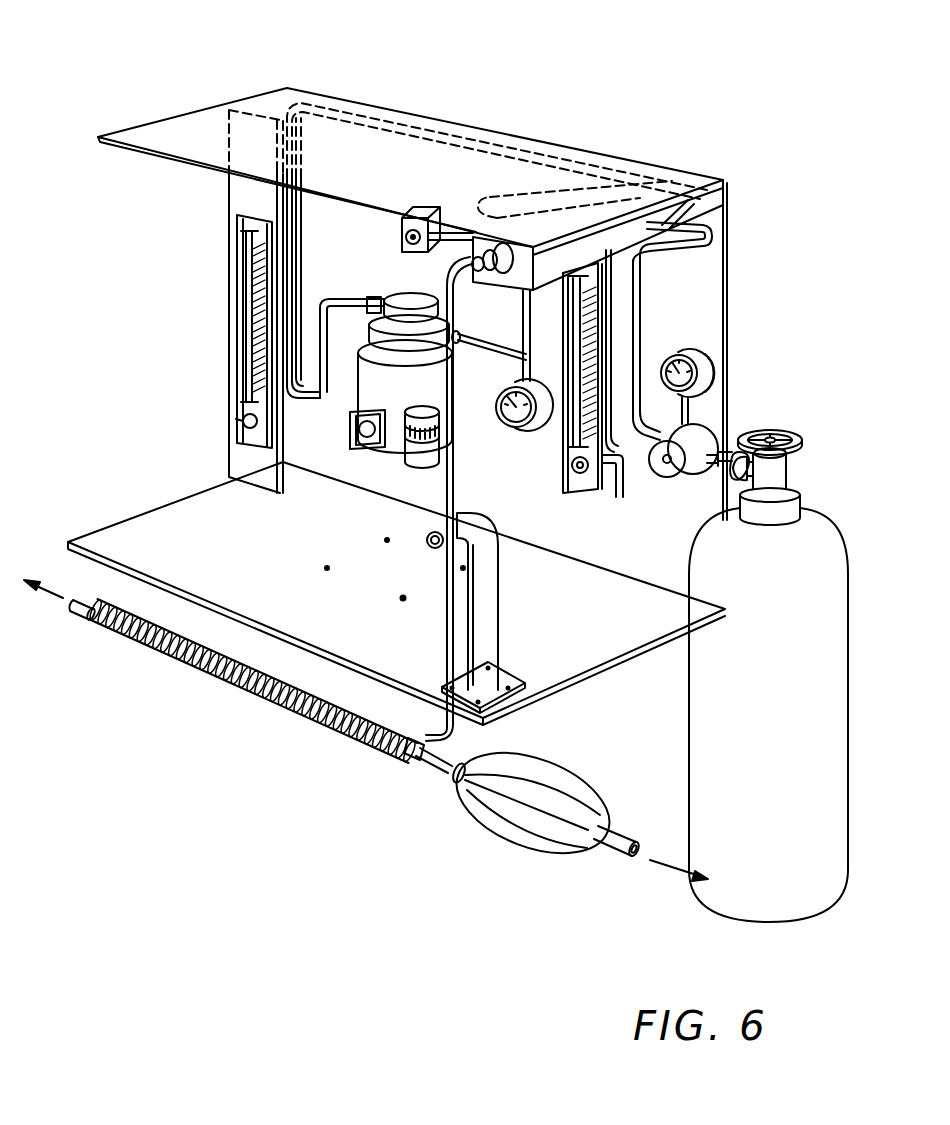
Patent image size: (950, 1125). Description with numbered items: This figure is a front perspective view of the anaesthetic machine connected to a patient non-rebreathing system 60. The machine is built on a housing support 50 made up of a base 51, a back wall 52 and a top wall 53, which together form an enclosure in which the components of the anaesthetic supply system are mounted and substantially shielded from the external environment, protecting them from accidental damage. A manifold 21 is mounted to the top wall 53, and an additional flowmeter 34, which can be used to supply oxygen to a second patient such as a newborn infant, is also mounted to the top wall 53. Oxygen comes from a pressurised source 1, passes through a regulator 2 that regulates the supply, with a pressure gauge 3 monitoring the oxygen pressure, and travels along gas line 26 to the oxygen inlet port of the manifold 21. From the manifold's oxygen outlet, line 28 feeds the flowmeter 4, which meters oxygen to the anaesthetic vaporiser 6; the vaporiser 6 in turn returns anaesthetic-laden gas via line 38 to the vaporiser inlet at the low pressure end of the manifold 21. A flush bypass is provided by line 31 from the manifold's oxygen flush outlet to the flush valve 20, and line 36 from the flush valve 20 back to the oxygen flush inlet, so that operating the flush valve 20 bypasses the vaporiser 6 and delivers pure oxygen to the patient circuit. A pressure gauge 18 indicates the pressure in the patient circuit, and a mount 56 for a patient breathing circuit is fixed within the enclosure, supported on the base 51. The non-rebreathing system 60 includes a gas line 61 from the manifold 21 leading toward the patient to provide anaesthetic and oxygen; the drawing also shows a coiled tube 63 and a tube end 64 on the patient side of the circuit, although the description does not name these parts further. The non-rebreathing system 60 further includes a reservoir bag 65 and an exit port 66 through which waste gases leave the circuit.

The pressurised source of oxygen 1 is at (782, 752).
The regulator 2 is at (665, 478).
The pressure gauge 3 is at (712, 380).
The flowmeter 4 is at (250, 378).
The anaesthetic vaporiser 6 is at (367, 383).
The pressure gauge 18 is at (536, 440).
The flush valve 20 is at (402, 238).
The manifold 21 is at (713, 240).
The gas line 26 is at (636, 350).
The line 28 is at (343, 122).
The line 31 is at (497, 205).
The additional flowmeter 34 is at (586, 338).
The line 36 is at (468, 248).
The line 38 is at (465, 334).
The support 50 is at (547, 703).
The base 51 is at (563, 663).
The back wall 52 is at (708, 294).
The top wall 53 is at (397, 118).
The mount 56 is at (490, 637).
The patient non-rebreathing system 60 is at (483, 853).
The gas line 61 is at (447, 482).
The coiled tube 63 is at (240, 687).
The tube end 64 is at (77, 606).
The reservoir bag 65 is at (559, 850).
The exit port 66 is at (617, 853).